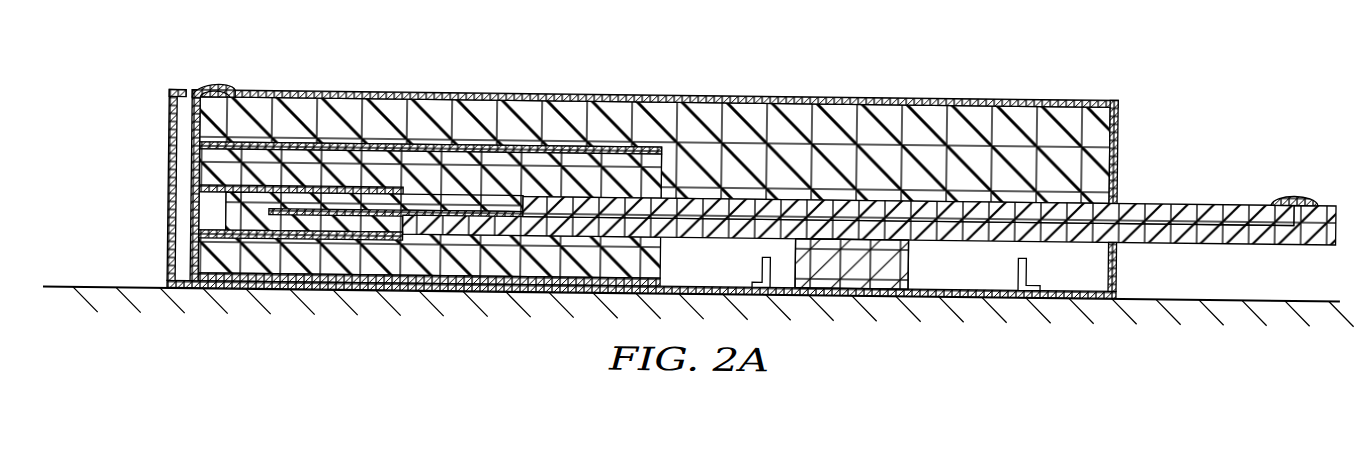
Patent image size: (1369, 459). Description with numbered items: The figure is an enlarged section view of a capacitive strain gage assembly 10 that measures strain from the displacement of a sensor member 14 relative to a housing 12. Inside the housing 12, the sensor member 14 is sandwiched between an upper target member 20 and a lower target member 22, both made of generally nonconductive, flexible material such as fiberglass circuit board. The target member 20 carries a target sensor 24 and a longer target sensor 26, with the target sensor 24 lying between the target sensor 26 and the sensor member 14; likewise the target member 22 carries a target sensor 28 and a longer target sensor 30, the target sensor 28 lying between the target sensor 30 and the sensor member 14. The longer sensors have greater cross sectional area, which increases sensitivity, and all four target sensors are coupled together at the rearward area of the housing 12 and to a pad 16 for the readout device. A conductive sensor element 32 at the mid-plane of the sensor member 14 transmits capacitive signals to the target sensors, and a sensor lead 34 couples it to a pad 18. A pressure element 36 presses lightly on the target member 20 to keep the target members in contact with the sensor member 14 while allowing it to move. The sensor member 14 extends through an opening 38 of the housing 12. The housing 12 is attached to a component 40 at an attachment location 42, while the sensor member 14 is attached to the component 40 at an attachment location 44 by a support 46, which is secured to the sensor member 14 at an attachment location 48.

The capacitive strain gage assembly 10 is at (757, 62).
The housing 12 is at (1092, 88).
The sensor member 14 is at (1200, 190).
The pad 16 is at (214, 80).
The pad 18 is at (1290, 181).
The target member 20 is at (460, 157).
The target member 22 is at (660, 247).
The target sensor 24 is at (232, 178).
The target sensor 26 is at (302, 141).
The target sensor 28 is at (232, 247).
The target sensor 30 is at (262, 290).
The sensor element 32 is at (455, 213).
The sensor lead 34 is at (1182, 230).
The pressure element 36 is at (955, 95).
The opening 38 is at (1117, 181).
The component 40 is at (1262, 286).
The attachment location 42 is at (343, 290).
The attachment location 44 is at (822, 288).
The support 46 is at (906, 252).
The attachment location 48 is at (867, 233).